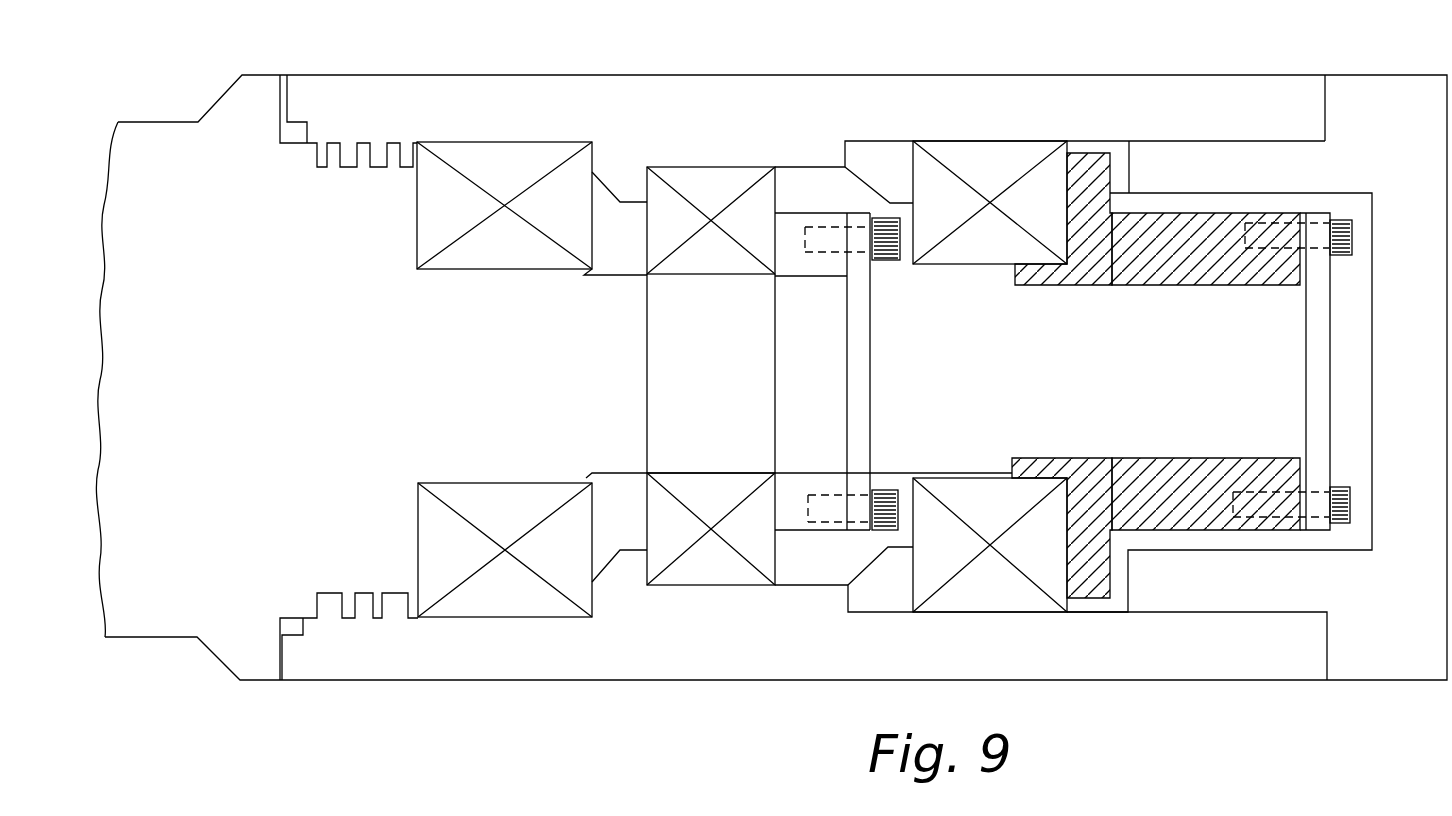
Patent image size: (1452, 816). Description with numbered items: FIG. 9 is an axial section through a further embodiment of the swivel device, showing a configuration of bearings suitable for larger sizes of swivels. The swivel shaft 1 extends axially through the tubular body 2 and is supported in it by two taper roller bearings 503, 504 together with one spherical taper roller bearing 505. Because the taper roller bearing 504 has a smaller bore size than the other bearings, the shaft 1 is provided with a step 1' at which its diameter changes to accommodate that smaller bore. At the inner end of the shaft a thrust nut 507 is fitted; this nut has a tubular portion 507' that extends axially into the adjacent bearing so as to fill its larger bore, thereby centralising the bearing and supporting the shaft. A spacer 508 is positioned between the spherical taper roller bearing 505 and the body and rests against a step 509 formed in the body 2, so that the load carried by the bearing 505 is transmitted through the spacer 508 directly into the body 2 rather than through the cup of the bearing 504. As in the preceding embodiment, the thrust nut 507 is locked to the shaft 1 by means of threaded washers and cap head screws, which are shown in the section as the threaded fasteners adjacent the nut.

The swivel shaft 1 is at (486, 348).
The step 1' is at (611, 186).
The body 2 is at (625, 645).
The taper roller bearing 503 is at (448, 215).
The taper roller bearing 504 is at (678, 222).
The spherical taper roller bearing 505 is at (953, 202).
The thrust nut 507 is at (1232, 371).
The tubular portion 507' is at (1078, 312).
The spacer 508 is at (880, 167).
The step 509 is at (830, 157).